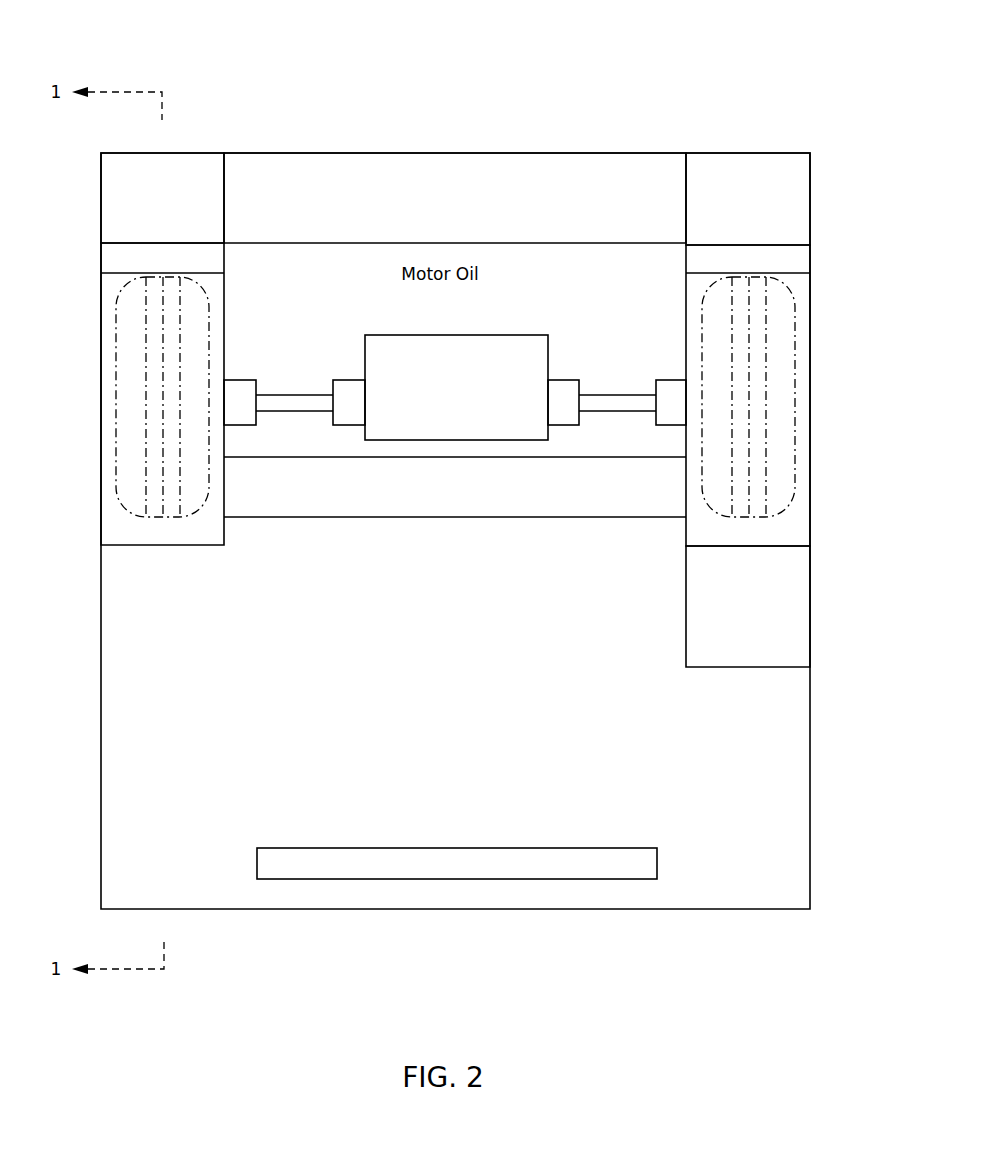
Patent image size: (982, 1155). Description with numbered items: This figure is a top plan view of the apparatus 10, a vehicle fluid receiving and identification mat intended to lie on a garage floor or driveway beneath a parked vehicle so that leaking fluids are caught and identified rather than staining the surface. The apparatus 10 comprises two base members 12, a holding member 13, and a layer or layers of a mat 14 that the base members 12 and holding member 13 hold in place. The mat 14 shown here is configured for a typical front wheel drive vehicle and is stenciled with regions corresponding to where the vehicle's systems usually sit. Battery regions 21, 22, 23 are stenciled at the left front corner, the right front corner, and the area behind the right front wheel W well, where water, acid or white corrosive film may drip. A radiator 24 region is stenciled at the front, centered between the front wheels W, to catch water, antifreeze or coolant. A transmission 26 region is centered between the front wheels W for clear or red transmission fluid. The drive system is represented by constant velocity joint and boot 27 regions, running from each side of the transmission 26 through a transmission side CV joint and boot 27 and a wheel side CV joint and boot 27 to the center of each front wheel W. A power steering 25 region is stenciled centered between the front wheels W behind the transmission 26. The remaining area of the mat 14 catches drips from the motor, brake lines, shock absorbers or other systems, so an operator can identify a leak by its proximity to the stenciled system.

The apparatus 10 is at (565, 108).
The base member 12 is at (100, 280).
The holding member 13 is at (487, 863).
The mat 14 is at (163, 679).
The battery 21 is at (192, 183).
The battery 22 is at (786, 190).
The battery 23 is at (778, 637).
The radiator 24 is at (316, 183).
The power steering 25 is at (548, 485).
The transmission 26 is at (478, 335).
The CV joint and boot 27 is at (347, 380).
The front wheel W is at (119, 439).